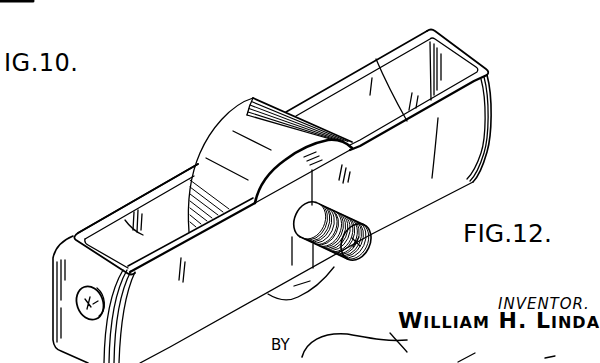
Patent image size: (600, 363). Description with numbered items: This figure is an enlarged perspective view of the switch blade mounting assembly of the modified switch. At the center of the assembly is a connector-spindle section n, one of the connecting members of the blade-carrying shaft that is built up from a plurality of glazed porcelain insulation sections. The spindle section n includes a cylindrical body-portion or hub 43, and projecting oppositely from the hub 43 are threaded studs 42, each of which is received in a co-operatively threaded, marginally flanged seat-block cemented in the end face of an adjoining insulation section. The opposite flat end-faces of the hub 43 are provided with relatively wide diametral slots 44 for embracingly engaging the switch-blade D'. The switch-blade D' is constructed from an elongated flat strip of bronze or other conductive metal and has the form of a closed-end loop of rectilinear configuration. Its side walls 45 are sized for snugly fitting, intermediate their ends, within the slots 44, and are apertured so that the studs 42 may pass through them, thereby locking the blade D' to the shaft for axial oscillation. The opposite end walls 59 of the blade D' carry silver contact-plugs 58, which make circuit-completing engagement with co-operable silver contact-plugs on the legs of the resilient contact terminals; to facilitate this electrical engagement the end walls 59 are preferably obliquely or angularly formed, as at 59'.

The switch-blade D' is at (309, 196).
The end walls 59 is at (250, 186).
The obliquely formed portions 59' is at (280, 220).
The side walls 45 is at (363, 95).
The connector-spindle section n is at (212, 135).
The cylindrical body-portion or hub 43 is at (247, 112).
The diametral slots 44 is at (283, 195).
The threaded stud 42 is at (362, 251).
The silver contact-plugs 58 is at (77, 302).